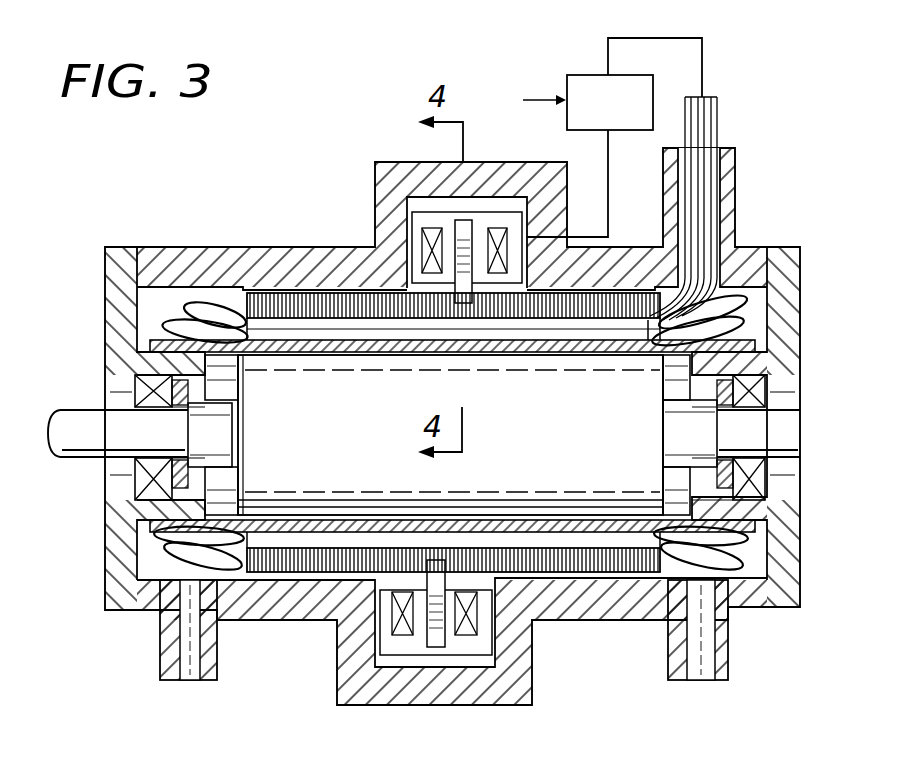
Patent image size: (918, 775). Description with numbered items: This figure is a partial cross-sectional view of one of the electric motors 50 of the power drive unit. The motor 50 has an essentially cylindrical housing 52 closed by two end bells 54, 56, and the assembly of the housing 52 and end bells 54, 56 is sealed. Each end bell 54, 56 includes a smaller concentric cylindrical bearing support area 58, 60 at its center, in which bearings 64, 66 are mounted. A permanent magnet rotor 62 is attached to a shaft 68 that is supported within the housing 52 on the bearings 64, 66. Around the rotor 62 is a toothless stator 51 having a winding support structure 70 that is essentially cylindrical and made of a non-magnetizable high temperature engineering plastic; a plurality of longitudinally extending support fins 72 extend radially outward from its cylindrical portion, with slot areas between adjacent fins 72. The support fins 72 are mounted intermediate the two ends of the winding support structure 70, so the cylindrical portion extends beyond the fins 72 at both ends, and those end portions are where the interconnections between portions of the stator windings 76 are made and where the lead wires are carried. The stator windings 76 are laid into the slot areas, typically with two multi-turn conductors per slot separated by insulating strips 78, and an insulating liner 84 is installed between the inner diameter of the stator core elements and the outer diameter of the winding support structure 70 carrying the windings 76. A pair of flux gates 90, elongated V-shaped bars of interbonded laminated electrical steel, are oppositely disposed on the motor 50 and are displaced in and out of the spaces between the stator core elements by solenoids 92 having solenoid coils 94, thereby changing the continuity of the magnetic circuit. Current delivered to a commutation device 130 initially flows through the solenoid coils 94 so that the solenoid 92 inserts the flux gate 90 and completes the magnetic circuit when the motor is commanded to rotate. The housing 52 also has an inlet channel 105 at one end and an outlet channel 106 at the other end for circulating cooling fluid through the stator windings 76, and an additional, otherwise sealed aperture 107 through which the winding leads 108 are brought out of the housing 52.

The electric motor 50 is at (153, 228).
The toothless stator 51 is at (166, 304).
The housing 52 is at (245, 623).
The end bell 54 is at (100, 600).
The end bell 56 is at (786, 610).
The bearing support area 58 is at (147, 522).
The bearing support area 60 is at (757, 525).
The permanent magnet rotor 62 is at (320, 426).
The bearing 64 is at (140, 480).
The bearing 66 is at (775, 393).
The shaft 68 is at (63, 413).
The winding support structure 70 is at (317, 340).
The support fins 72 is at (273, 327).
The stator windings 76 is at (678, 568).
The insulating strips 78 is at (157, 332).
The insulating liner 84 is at (562, 545).
The flux gates 90 is at (337, 297).
The solenoids 92 is at (375, 160).
The solenoid coils 94 is at (375, 625).
The inlet channel 105 is at (190, 672).
The outlet channel 106 is at (703, 672).
The aperture 107 is at (705, 188).
The winding leads 108 is at (697, 143).
The commutation device 130 is at (612, 137).